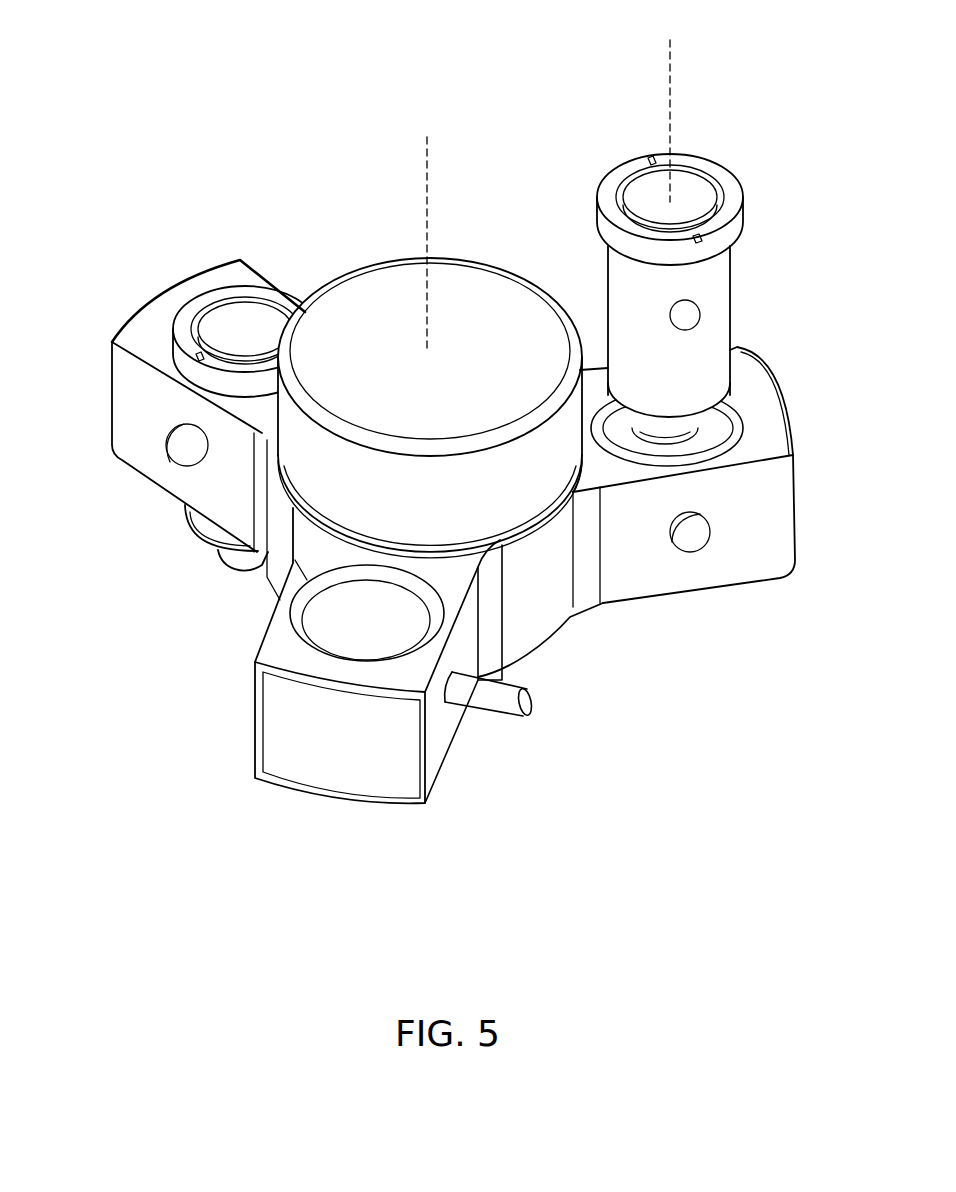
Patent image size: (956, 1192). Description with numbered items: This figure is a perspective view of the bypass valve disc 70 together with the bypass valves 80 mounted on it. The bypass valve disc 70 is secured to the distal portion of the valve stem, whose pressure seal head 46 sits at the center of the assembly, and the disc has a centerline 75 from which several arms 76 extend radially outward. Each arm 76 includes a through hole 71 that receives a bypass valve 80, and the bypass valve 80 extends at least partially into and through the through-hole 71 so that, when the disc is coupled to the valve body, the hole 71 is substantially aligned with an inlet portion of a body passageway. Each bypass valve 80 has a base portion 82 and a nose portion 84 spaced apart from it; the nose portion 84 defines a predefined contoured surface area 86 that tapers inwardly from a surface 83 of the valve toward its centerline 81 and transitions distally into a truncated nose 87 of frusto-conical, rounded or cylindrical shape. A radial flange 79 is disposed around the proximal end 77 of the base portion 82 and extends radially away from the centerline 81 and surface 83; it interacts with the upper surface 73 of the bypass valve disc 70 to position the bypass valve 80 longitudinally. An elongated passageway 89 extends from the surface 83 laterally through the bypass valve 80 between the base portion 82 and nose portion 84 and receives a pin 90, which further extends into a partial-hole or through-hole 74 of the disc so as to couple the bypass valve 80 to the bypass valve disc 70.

The pressure seal head 46 is at (408, 272).
The bypass valve disc 70 is at (760, 510).
The through hole 71 is at (352, 632).
The surface 73 is at (263, 657).
The through-hole 74 is at (183, 452).
The centerline 75 is at (425, 172).
The arm 76 is at (125, 407).
The proximal end 77 is at (578, 178).
The radial flange 79 is at (203, 305).
The bypass valve 80 is at (248, 322).
The centerline 81 is at (665, 62).
The base portion 82 is at (735, 148).
The surface 83 is at (608, 283).
The nose portion 84 is at (740, 390).
The predefined contoured surface area 86 is at (703, 427).
The truncated nose 87 is at (240, 575).
The elongated passageway 89 is at (693, 313).
The pin 90 is at (493, 703).